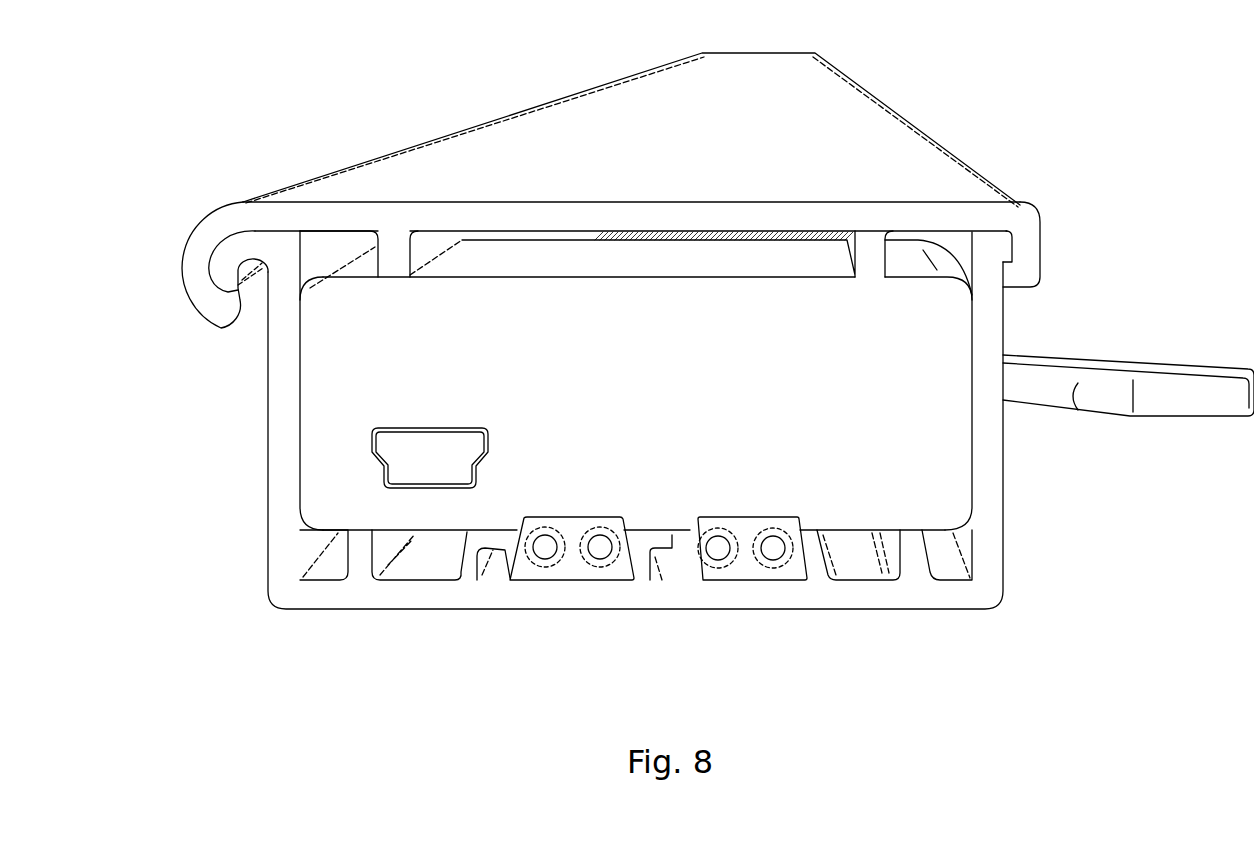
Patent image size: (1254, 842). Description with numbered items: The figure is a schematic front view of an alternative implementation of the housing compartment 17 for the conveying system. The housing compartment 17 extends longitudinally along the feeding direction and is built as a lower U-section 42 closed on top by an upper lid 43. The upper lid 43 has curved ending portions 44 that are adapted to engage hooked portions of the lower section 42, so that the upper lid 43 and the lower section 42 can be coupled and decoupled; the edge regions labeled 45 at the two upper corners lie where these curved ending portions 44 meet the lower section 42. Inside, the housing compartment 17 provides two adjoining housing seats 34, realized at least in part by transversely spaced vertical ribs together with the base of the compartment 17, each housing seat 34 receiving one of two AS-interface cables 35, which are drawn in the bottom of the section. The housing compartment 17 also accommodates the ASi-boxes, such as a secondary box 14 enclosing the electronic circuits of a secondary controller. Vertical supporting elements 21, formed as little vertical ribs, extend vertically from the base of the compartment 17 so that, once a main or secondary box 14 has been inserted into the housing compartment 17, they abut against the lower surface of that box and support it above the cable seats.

The secondary box 14 is at (187, 273).
The housing compartment 17 is at (1000, 488).
The vertical supporting element 21 is at (365, 532).
The housing seat 34 is at (510, 575).
The AS-interface cable 35 is at (570, 568).
The lower U-section 42 is at (993, 535).
The upper lid 43 is at (947, 213).
The curved ending portion 44 is at (1033, 249).
The hook lip 45 is at (255, 247).